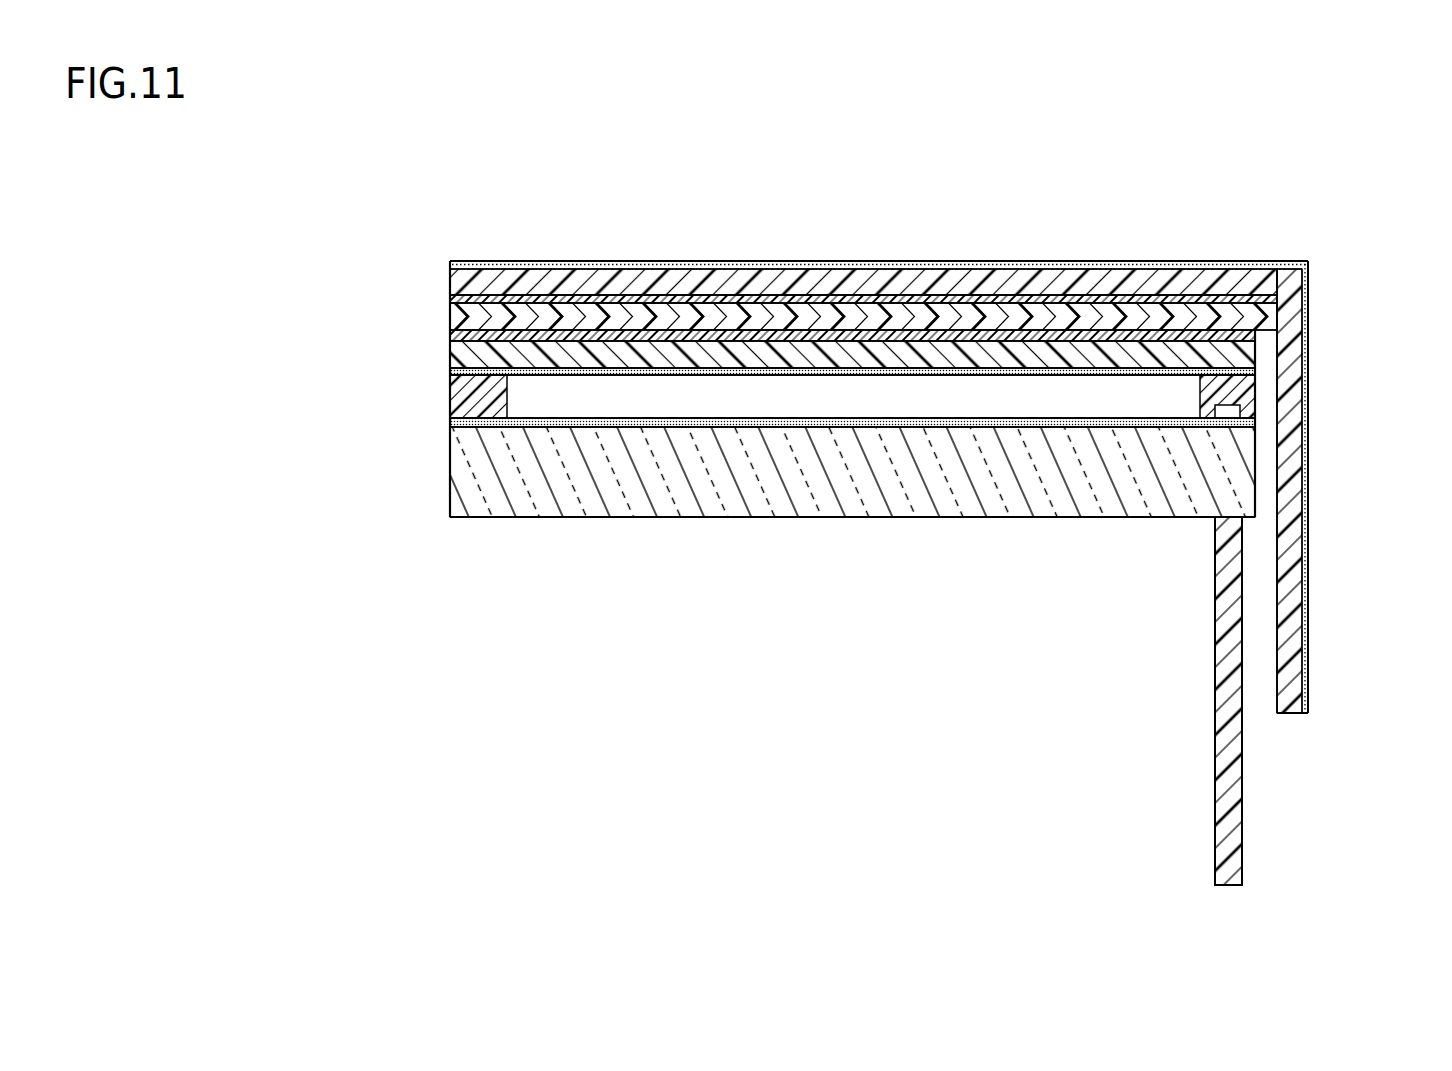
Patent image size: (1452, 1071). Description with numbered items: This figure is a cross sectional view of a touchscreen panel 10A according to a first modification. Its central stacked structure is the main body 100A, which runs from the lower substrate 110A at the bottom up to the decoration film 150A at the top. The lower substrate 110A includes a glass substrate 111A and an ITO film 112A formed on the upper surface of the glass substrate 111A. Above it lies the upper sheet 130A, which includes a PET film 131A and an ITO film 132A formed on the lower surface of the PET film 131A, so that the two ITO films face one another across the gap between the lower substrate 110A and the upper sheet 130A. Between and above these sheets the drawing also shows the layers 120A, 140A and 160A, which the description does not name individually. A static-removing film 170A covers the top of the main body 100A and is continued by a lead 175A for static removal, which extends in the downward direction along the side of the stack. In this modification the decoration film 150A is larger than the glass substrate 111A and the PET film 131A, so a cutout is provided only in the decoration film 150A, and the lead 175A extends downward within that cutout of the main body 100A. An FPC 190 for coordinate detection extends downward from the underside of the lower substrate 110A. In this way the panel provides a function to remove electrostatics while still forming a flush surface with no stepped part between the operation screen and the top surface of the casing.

The touchscreen panel 10A is at (884, 159).
The main body 100A is at (222, 263).
The lower substrate 110A is at (313, 462).
The glass substrate 111A is at (455, 486).
The ITO film 112A is at (452, 426).
The spacer / sealing member 120A is at (452, 395).
The upper sheet 130A is at (313, 342).
The PET film 131A is at (460, 355).
The ITO film 132A is at (452, 375).
The adhesive layer 140A is at (452, 336).
The decoration film 150A is at (460, 316).
The cover layer 160A is at (452, 298).
The static-removing film 170A is at (772, 252).
The lead 175A is at (1316, 481).
The FPC 190 is at (1215, 783).